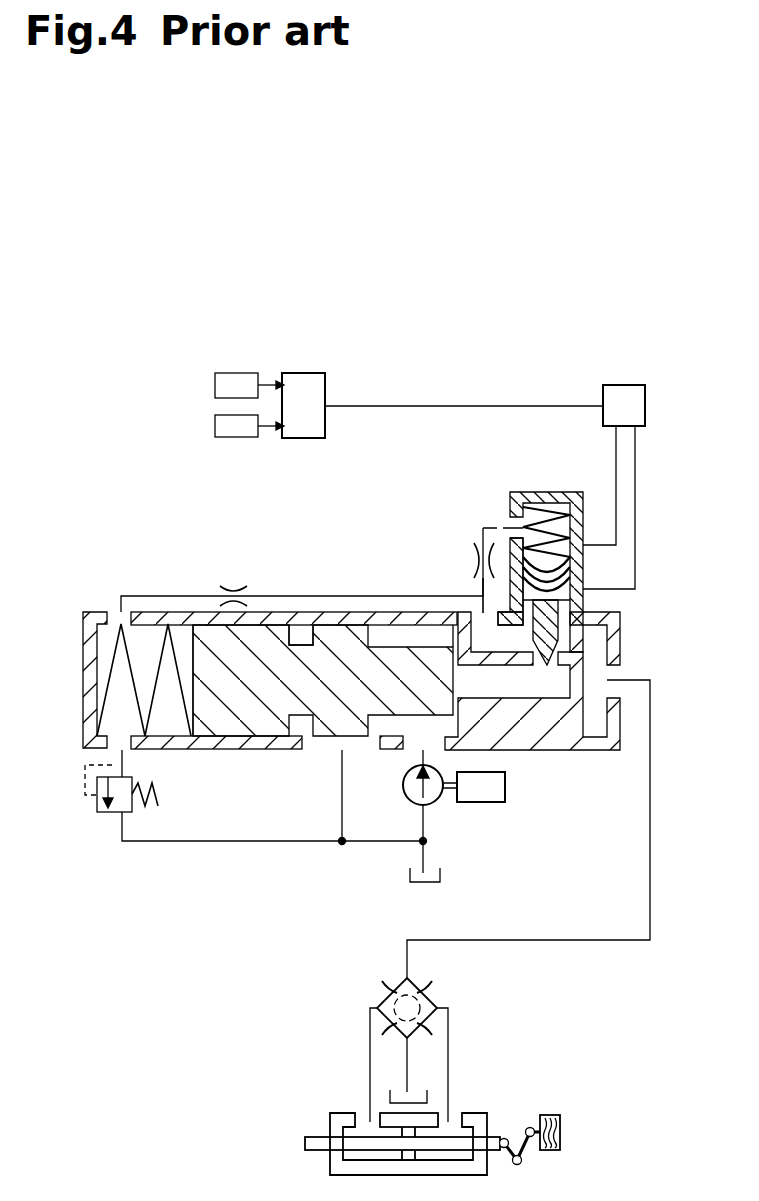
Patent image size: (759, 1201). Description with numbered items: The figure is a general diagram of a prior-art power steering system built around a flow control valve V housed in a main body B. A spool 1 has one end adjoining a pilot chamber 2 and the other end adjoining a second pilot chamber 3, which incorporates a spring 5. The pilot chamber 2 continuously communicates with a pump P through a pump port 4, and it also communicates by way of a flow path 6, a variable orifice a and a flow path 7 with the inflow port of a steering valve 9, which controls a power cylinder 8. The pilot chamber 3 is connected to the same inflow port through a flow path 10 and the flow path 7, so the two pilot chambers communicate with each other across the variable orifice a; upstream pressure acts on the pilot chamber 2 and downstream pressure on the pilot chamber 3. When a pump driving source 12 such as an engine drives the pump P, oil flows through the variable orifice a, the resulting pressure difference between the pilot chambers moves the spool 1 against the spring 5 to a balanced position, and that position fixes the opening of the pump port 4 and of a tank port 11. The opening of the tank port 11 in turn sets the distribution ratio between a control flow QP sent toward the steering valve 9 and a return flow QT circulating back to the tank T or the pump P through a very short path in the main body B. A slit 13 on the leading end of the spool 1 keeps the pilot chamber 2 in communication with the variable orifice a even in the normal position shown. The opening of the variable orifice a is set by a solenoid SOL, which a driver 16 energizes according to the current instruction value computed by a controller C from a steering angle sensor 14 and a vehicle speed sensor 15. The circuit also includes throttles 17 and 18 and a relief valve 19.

The spool 1 is at (279, 633).
The pilot chamber 2 is at (406, 630).
The pilot chamber 3 is at (142, 632).
The pump port 4 is at (412, 742).
The spring 5 is at (120, 623).
The flow path 6 is at (522, 690).
The flow path 7 is at (598, 732).
The power cylinder 8 is at (468, 1113).
The steering valve 9 is at (383, 1000).
The flow path 10 is at (337, 596).
The tank port 11 is at (322, 745).
The pump driving source 12 is at (492, 802).
The slit 13 is at (453, 623).
The steering angle sensor 14 is at (225, 387).
The vehicle speed sensor 15 is at (225, 427).
The driver 16 is at (620, 403).
The throttle 17 is at (234, 583).
The throttle 18 is at (468, 558).
The relief valve 19 is at (100, 817).
The controller C is at (305, 385).
The main body B is at (181, 562).
The flow control valve V is at (66, 654).
The solenoid SOL is at (549, 560).
The variable orifice a is at (550, 668).
The pump P is at (438, 803).
The tank T is at (408, 873).
The control flow QP is at (535, 812).
The return flow QT is at (324, 797).